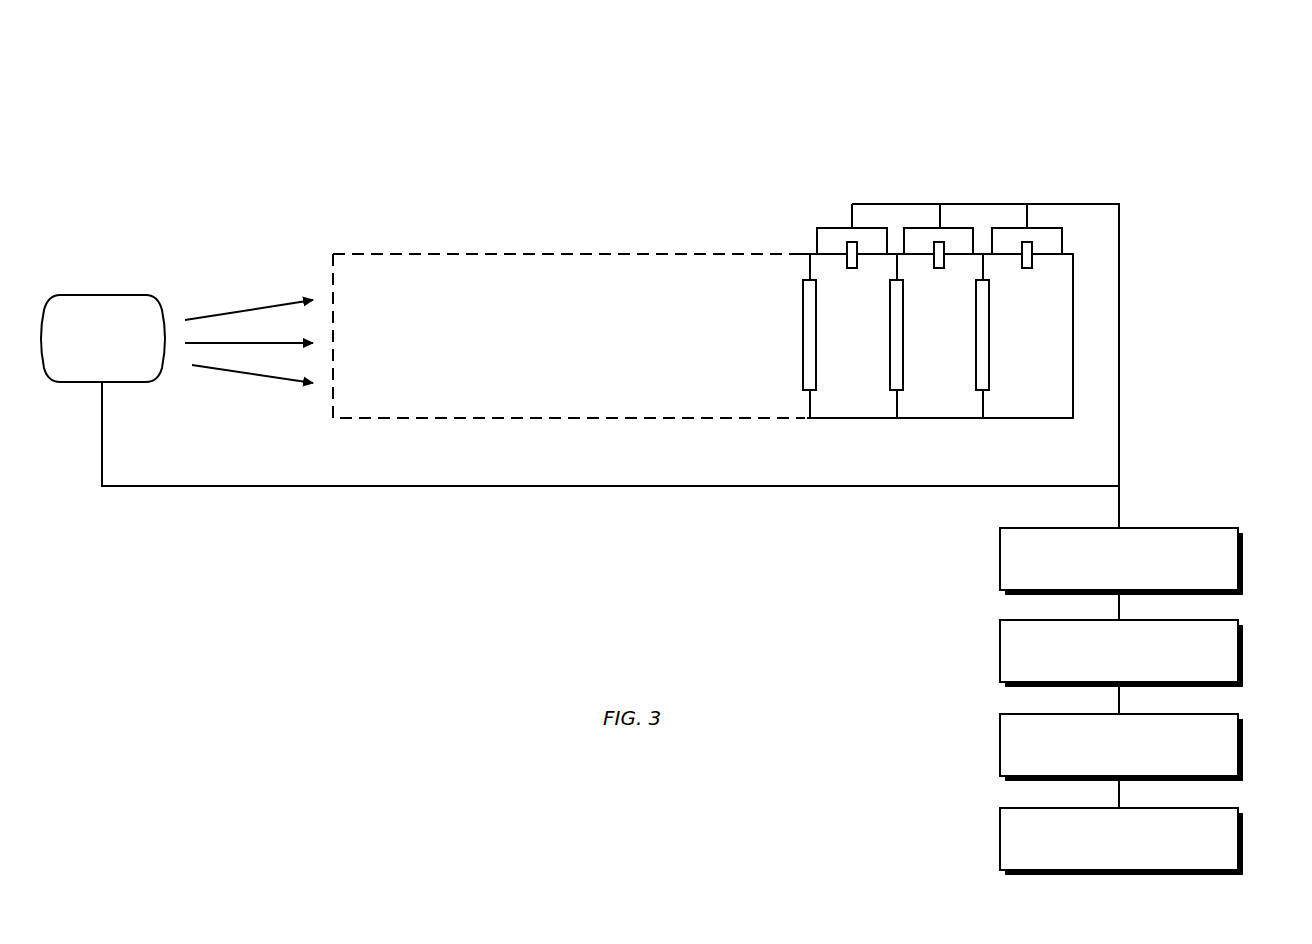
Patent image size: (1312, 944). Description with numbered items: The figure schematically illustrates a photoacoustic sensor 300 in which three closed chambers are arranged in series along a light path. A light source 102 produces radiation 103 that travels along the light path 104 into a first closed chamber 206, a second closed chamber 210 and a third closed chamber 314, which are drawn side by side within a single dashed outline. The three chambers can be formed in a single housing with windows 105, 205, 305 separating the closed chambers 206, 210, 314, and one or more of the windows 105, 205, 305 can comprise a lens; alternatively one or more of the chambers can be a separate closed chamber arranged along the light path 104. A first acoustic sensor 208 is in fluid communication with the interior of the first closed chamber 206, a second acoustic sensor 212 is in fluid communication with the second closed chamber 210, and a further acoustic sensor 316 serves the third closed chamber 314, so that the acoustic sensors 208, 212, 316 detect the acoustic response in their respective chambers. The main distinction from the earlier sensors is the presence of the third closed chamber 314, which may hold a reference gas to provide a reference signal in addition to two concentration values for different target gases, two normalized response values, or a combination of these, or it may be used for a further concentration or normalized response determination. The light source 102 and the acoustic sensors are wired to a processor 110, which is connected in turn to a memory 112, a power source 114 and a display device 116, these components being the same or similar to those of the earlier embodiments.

The photoacoustic sensor 300 is at (1034, 64).
The light source 102 is at (110, 295).
The radiation 103 is at (256, 280).
The light path 104 is at (596, 253).
The window 105 is at (801, 340).
The window 205 is at (888, 346).
The window 305 is at (991, 332).
The first acoustic sensor 208 is at (815, 230).
The second acoustic sensor 212 is at (965, 228).
The acoustic sensor 316 is at (1062, 230).
The first closed chamber 206 is at (831, 420).
The second closed chamber 210 is at (936, 420).
The third closed chamber 314 is at (1028, 420).
The processor 110 is at (1243, 543).
The memory 112 is at (1243, 653).
The power source 114 is at (1243, 752).
The display device 116 is at (1243, 843).